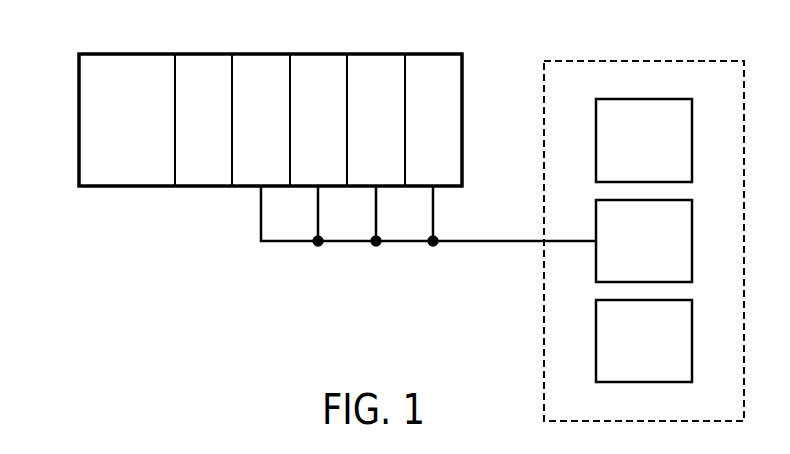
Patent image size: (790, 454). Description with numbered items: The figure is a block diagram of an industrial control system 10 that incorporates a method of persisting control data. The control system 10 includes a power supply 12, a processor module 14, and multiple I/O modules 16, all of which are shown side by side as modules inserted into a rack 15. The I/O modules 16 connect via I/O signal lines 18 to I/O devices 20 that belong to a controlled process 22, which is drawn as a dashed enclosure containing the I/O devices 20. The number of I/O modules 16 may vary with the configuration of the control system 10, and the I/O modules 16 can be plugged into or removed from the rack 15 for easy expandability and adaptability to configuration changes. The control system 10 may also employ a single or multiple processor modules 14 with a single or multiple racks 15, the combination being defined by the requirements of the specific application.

The industrial control system 10 is at (44, 92).
The power supply 12 is at (139, 135).
The processor module 14 is at (214, 135).
The rack 15 is at (470, 77).
The I/O modules 16 is at (272, 135).
The I/O signal lines 18 is at (376, 246).
The I/O devices 20 is at (655, 153).
The controlled process 22 is at (644, 60).